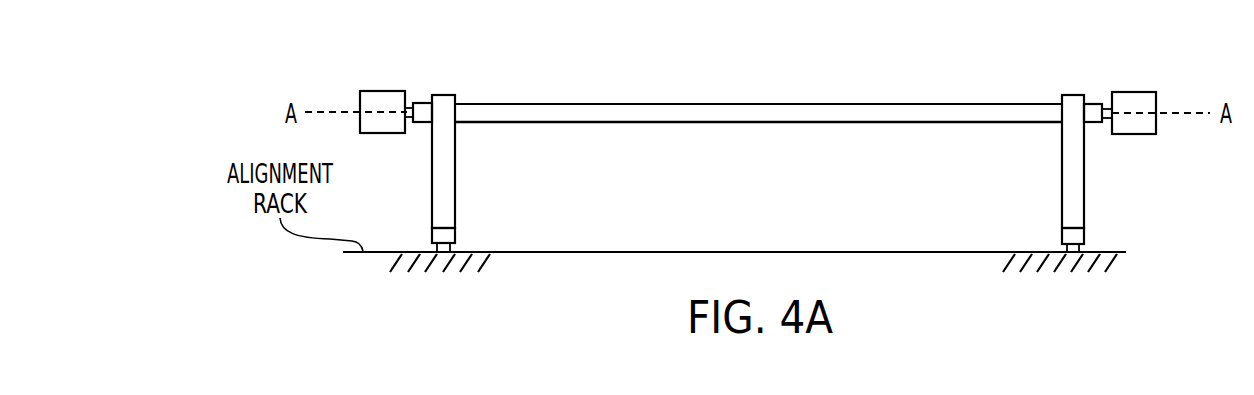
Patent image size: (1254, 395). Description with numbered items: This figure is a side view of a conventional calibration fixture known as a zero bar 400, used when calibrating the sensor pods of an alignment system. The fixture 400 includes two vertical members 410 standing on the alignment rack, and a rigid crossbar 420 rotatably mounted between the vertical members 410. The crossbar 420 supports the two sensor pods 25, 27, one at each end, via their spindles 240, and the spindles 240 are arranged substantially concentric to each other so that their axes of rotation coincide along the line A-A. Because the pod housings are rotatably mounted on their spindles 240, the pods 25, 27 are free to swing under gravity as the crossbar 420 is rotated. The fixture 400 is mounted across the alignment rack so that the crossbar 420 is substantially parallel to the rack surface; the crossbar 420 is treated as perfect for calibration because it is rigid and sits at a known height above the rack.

The zero bar calibration fixture 400 is at (382, 59).
The sensor pod 25 is at (380, 134).
The sensor pod 27 is at (1137, 134).
The spindle 240 is at (408, 106).
The vertical member 410 is at (456, 195).
The crossbar 420 is at (758, 113).